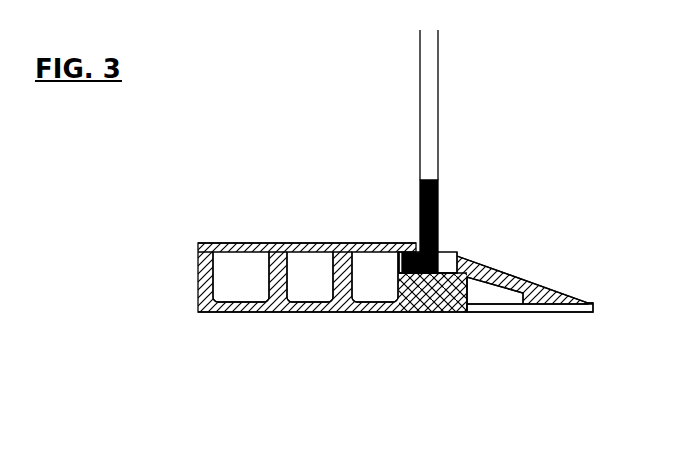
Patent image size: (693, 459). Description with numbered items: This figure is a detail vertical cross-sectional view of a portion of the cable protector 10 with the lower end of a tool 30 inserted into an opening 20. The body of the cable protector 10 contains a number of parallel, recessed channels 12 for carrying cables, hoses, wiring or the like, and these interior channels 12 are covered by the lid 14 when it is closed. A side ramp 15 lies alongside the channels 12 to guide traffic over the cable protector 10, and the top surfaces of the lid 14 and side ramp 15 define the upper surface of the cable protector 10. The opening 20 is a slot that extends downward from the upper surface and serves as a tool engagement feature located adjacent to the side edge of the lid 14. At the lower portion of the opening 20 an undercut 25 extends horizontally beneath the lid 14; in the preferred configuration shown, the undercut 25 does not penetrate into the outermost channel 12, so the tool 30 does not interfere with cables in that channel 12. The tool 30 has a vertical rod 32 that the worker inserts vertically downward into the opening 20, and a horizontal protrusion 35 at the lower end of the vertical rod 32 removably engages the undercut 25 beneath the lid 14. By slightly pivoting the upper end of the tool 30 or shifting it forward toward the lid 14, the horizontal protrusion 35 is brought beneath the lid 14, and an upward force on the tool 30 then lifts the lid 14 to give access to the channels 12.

The cable protector 10 is at (160, 245).
The channel 12 is at (242, 292).
The lid 14 is at (232, 243).
The side ramp 15 is at (538, 282).
The opening 20 is at (445, 260).
The undercut 25 is at (405, 277).
The tool 30 is at (450, 140).
The vertical rod 32 is at (440, 193).
The horizontal protrusion 35 is at (467, 305).